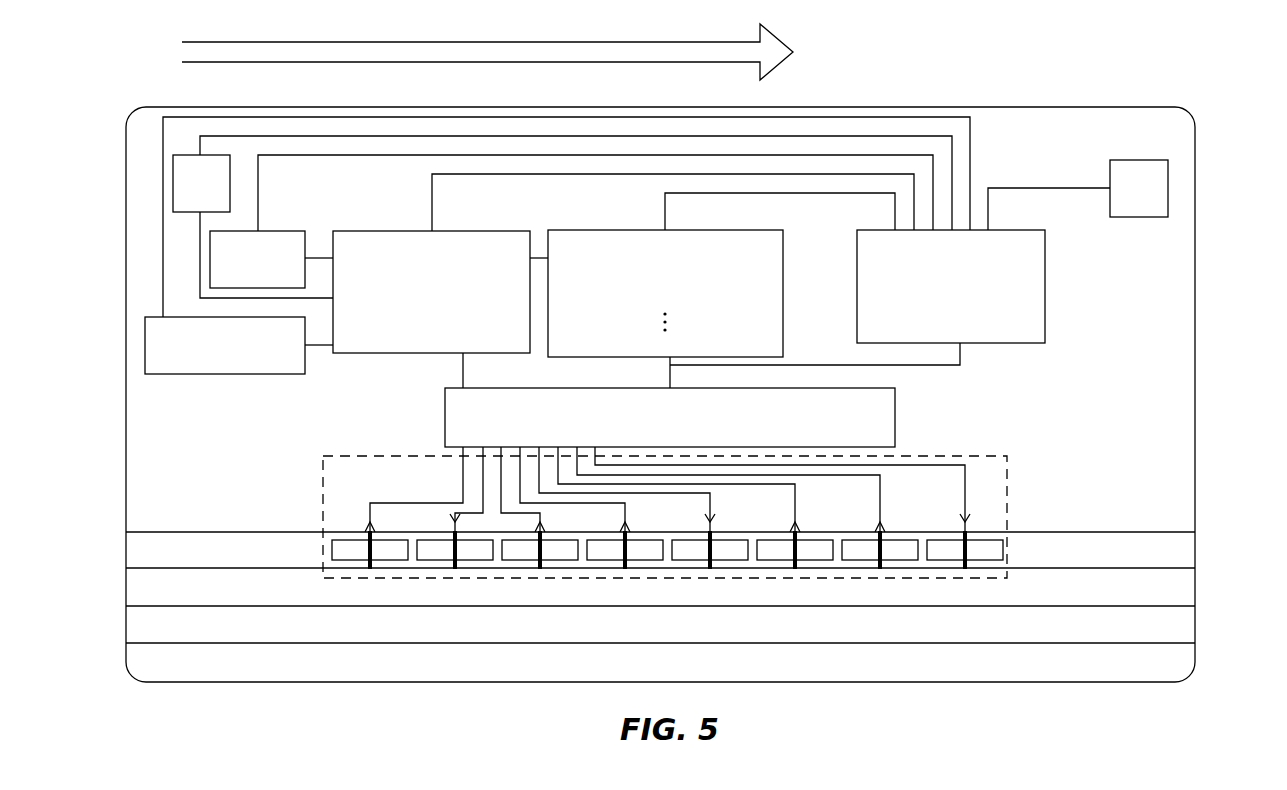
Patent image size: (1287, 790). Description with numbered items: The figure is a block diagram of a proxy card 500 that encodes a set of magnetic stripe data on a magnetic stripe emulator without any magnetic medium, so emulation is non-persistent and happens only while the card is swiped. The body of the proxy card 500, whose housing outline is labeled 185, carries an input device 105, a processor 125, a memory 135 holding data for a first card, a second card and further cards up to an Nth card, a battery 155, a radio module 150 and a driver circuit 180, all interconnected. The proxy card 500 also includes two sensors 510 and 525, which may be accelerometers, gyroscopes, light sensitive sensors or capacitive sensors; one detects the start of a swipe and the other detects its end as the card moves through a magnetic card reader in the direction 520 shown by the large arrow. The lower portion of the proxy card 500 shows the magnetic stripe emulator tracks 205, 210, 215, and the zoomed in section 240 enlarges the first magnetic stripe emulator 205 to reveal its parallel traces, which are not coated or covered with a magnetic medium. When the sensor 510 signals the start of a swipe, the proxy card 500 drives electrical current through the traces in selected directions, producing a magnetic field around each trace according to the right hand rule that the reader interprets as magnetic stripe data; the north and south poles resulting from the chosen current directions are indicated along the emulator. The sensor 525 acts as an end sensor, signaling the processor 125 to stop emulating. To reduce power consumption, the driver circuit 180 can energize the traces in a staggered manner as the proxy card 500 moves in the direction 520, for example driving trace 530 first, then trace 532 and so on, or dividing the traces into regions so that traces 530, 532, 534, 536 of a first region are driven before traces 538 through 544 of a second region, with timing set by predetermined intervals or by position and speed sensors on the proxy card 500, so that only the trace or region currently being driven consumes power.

The proxy card 500 is at (1134, 46).
The sensor 510 is at (1163, 187).
The direction 520 is at (487, 41).
The sensor 525 is at (173, 185).
The card housing 185 is at (1010, 128).
The input device 105 is at (295, 231).
The processor 125 is at (483, 231).
The memory 135 is at (783, 250).
The battery 155 is at (1045, 295).
The radio module 150 is at (275, 375).
The driver circuit 180 is at (895, 415).
The zoomed in section 240 is at (707, 535).
The magnetic stripe emulator 205 is at (1196, 545).
The magnetic stripe emulator 210 is at (1196, 582).
The magnetic stripe emulator 215 is at (1196, 620).
The trace 530 is at (967, 570).
The trace 532 is at (882, 570).
The trace 534 is at (797, 570).
The trace 536 is at (712, 570).
The trace 538 is at (627, 570).
The trace 544 is at (372, 570).